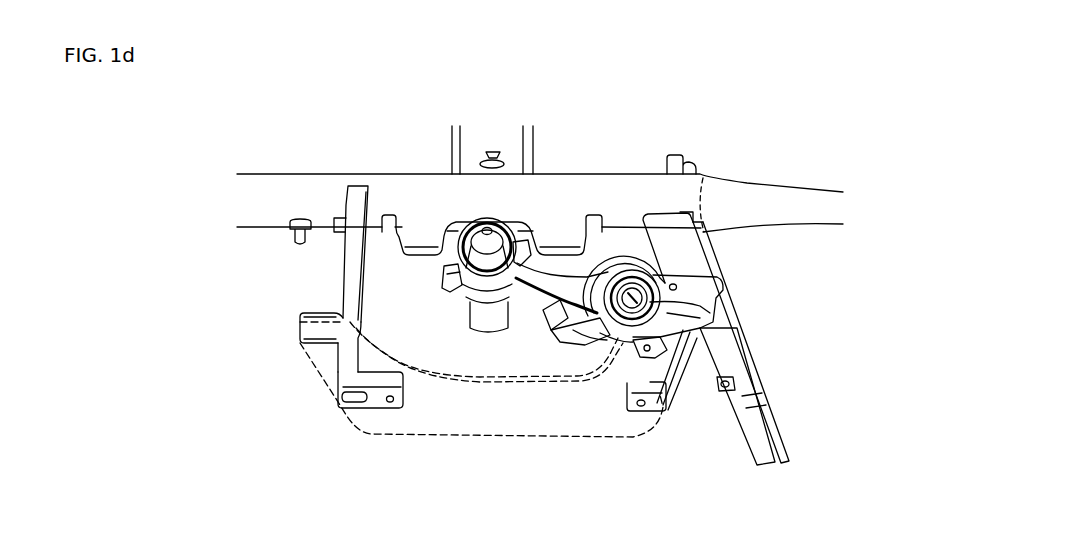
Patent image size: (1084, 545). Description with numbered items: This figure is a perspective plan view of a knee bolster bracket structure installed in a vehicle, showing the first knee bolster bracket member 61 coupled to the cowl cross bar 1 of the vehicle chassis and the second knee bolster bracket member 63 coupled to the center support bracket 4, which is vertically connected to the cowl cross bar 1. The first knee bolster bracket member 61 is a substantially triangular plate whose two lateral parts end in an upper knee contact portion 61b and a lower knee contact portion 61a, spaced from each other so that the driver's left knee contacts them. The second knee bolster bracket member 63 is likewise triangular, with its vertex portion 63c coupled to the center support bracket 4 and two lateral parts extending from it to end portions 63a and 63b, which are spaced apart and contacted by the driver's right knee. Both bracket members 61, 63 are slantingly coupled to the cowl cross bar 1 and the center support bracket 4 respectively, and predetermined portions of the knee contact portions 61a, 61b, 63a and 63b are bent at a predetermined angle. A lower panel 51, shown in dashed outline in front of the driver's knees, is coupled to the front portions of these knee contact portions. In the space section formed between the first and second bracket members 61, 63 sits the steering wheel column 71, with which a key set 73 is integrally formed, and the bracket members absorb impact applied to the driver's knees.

The cowl cross bar 1 is at (410, 178).
The center support bracket 4 is at (746, 371).
The lower panel 51 is at (508, 423).
The first knee bolster bracket member 61 is at (350, 271).
The lower knee contact portion 61a is at (380, 400).
The upper knee contact portion 61b is at (300, 330).
The second knee bolster bracket member 63 is at (733, 328).
The end portion of lateral part 63a is at (641, 407).
The end portion of lateral part 63b is at (620, 360).
The vertex portion 63c is at (723, 293).
The steering wheel column 71 is at (489, 230).
The key set 73 is at (630, 288).